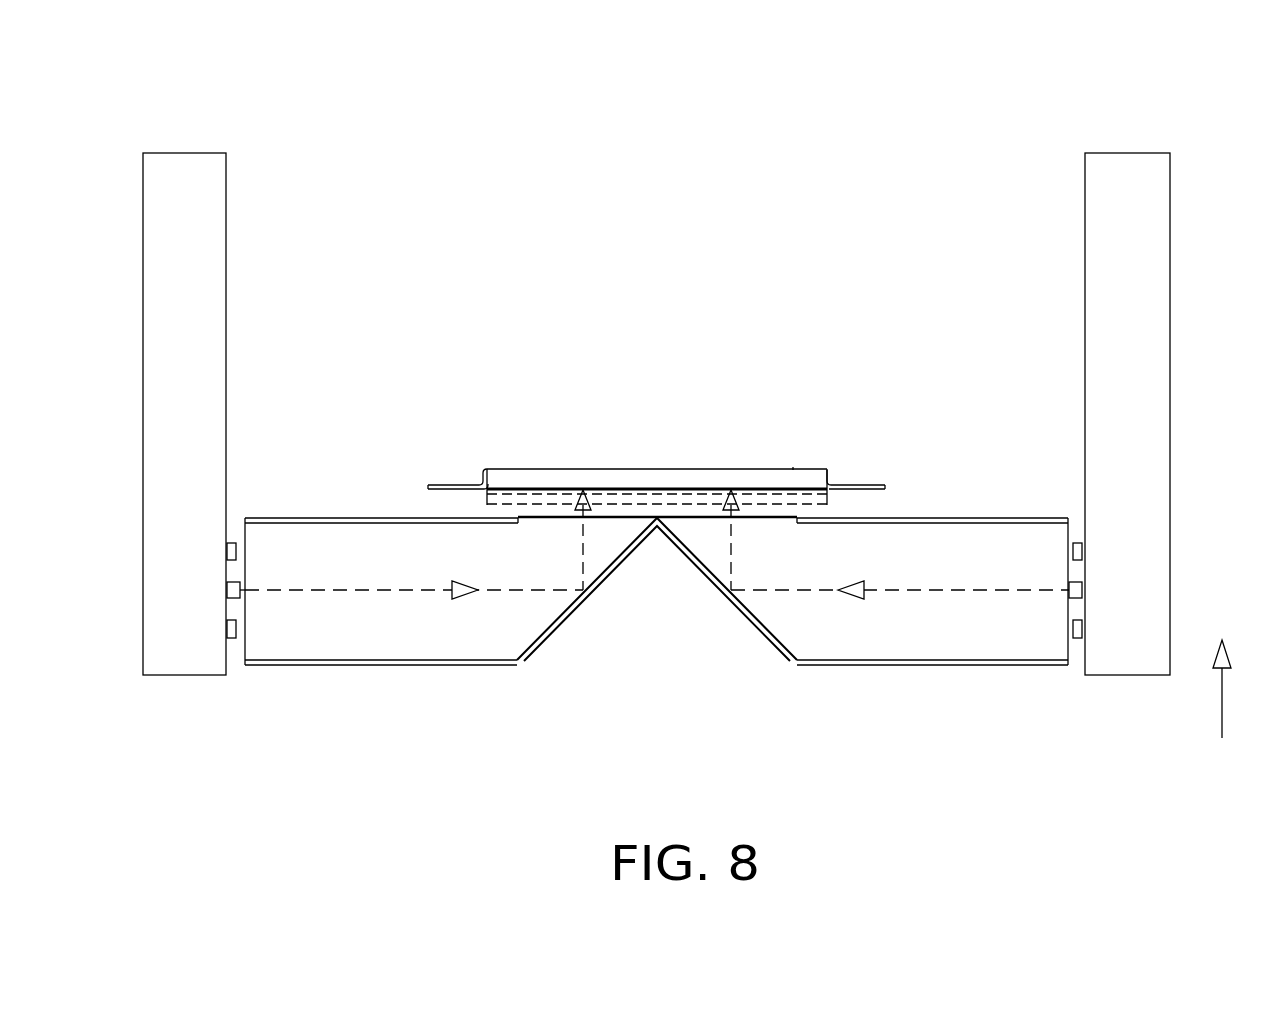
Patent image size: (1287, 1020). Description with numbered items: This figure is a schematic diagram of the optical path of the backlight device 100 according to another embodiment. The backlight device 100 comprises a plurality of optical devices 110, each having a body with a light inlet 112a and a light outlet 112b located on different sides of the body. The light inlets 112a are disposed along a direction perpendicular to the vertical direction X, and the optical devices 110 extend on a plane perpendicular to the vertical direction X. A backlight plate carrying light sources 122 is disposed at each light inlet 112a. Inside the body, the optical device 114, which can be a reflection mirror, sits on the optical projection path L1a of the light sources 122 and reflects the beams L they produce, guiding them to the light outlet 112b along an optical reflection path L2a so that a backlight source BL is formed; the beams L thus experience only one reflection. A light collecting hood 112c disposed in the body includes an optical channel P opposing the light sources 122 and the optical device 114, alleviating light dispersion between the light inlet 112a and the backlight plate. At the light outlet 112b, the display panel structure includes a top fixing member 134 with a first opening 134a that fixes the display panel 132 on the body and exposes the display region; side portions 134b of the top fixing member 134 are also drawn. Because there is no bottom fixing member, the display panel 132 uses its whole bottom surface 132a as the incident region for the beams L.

The backlight device 100 is at (1230, 78).
The optical device 110 is at (645, 595).
The light inlet 112a is at (245, 636).
The light outlet 112b is at (670, 556).
The light collecting hood 112c is at (395, 537).
The optical device 114 is at (657, 562).
The light source 122 is at (236, 583).
The display panel 132 is at (721, 412).
The bottom surface 132a is at (831, 498).
The top fixing member 134 is at (673, 365).
The first opening 134a is at (577, 469).
The side tab of frame 134b is at (457, 486).
The backlight source BL is at (684, 488).
The optical channel P is at (373, 547).
The beams L is at (326, 598).
The optical projection path L1a is at (427, 628).
The optical reflection path L2a is at (704, 546).
The vertical direction X is at (1235, 689).